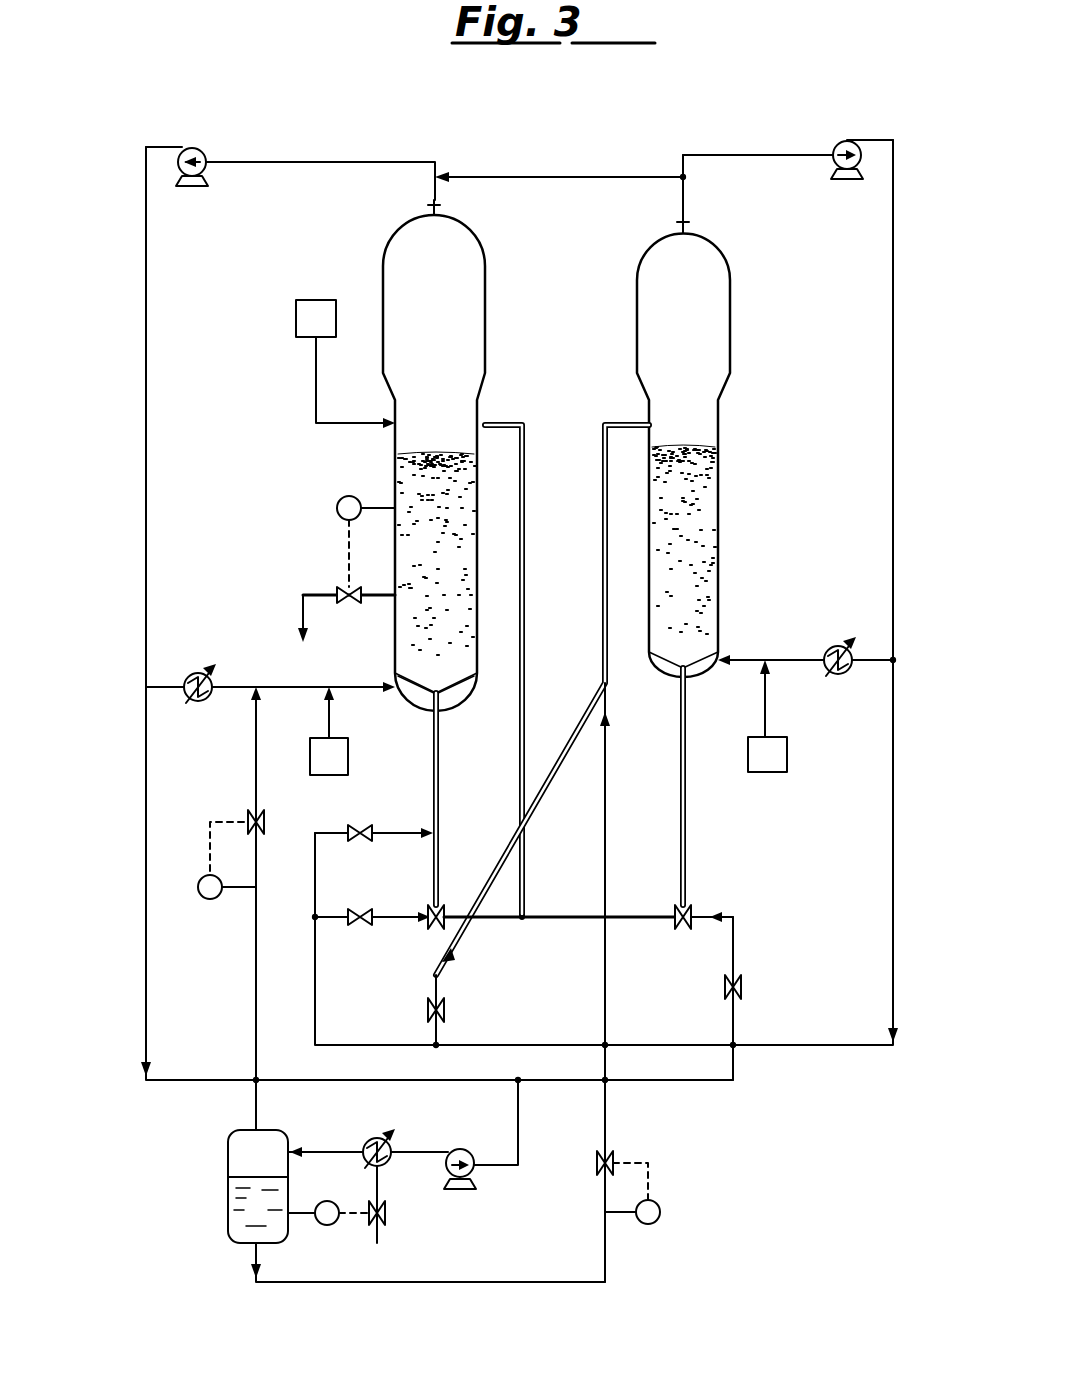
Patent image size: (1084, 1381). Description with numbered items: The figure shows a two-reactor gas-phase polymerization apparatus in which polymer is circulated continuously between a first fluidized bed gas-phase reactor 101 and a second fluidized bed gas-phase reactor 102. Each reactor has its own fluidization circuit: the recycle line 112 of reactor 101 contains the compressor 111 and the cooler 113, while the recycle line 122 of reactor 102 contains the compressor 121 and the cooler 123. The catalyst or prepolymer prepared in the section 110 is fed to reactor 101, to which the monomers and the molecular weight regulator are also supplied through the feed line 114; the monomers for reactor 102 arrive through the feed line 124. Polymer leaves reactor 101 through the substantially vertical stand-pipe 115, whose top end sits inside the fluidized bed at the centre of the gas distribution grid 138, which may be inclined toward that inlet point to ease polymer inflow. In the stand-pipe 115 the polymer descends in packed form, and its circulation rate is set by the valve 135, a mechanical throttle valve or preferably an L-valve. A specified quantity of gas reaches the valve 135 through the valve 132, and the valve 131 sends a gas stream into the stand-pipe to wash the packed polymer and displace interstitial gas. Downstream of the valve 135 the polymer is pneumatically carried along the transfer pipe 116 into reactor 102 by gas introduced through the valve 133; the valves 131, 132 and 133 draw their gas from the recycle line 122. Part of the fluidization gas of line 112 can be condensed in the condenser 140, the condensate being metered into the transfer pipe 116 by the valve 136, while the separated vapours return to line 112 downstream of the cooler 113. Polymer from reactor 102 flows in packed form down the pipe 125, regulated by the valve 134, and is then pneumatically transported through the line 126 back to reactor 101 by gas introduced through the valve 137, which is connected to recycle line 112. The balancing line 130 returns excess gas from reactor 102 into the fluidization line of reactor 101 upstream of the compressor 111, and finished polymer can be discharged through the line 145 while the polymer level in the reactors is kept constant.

The fluidized bed gas-phase reactor 101 is at (485, 308).
The fluidized bed gas-phase reactor 102 is at (730, 305).
The catalyst preparation section 110 is at (308, 300).
The compressor 111 is at (202, 150).
The fluidization circuit 112 is at (146, 808).
The cooler 113 is at (194, 673).
The feed line 114 is at (310, 756).
The stand-pipe 115 is at (440, 783).
The transfer pipe 116 is at (605, 592).
The compressor 121 is at (843, 142).
The fluidization circuit 122 is at (893, 882).
The cooler 123 is at (834, 646).
The feed line 124 is at (787, 757).
The pipe 125 is at (687, 800).
The line 126 is at (525, 510).
The balancing line 130 is at (560, 177).
The valve 131 is at (356, 830).
The valve 132 is at (365, 924).
The valve 133 is at (446, 1010).
The valve 134 is at (690, 910).
The valve 135 is at (442, 906).
The valve 136 is at (612, 1160).
The valve 137 is at (741, 984).
The gas distribution grid 138 is at (442, 706).
The condenser 140 is at (228, 1186).
The discharge line 145 is at (304, 594).